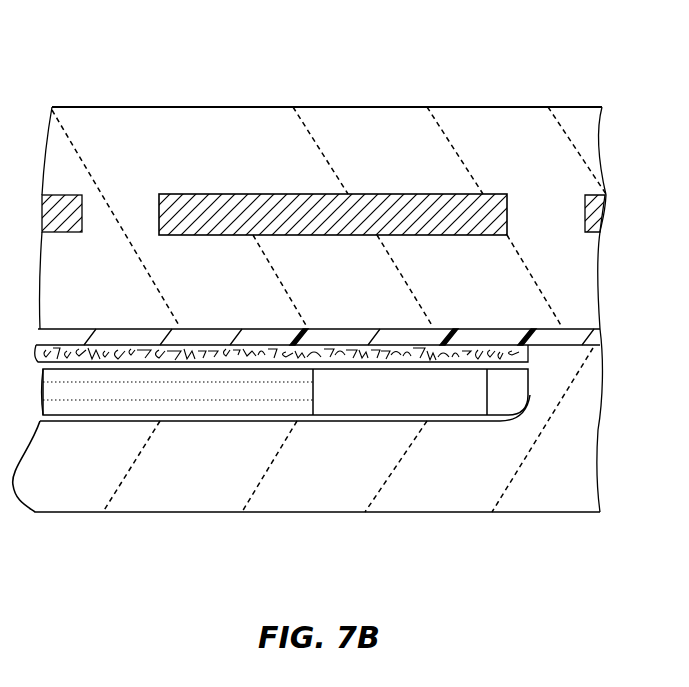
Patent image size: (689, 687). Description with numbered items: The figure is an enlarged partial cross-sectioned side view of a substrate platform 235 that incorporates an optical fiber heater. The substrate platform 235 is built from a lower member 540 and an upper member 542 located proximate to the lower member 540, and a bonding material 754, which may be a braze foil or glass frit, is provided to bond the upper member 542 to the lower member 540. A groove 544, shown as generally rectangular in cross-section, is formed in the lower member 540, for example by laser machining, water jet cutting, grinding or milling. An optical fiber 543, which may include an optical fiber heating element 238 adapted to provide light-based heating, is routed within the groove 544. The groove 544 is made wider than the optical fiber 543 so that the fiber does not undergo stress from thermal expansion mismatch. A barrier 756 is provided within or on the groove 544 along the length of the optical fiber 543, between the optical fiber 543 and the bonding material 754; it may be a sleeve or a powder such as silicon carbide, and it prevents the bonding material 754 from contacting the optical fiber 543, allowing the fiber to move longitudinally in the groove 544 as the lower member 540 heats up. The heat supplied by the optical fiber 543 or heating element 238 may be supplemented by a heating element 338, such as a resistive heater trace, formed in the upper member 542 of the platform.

The substrate platform 235 is at (132, 105).
The heating element 338 is at (290, 194).
The upper member 542 is at (500, 107).
The bonding material 754 is at (587, 340).
The barrier 756 is at (327, 345).
The optical fiber 543 is at (225, 421).
The heating element 238 is at (437, 393).
The groove 544 is at (88, 421).
The lower member 540 is at (560, 512).